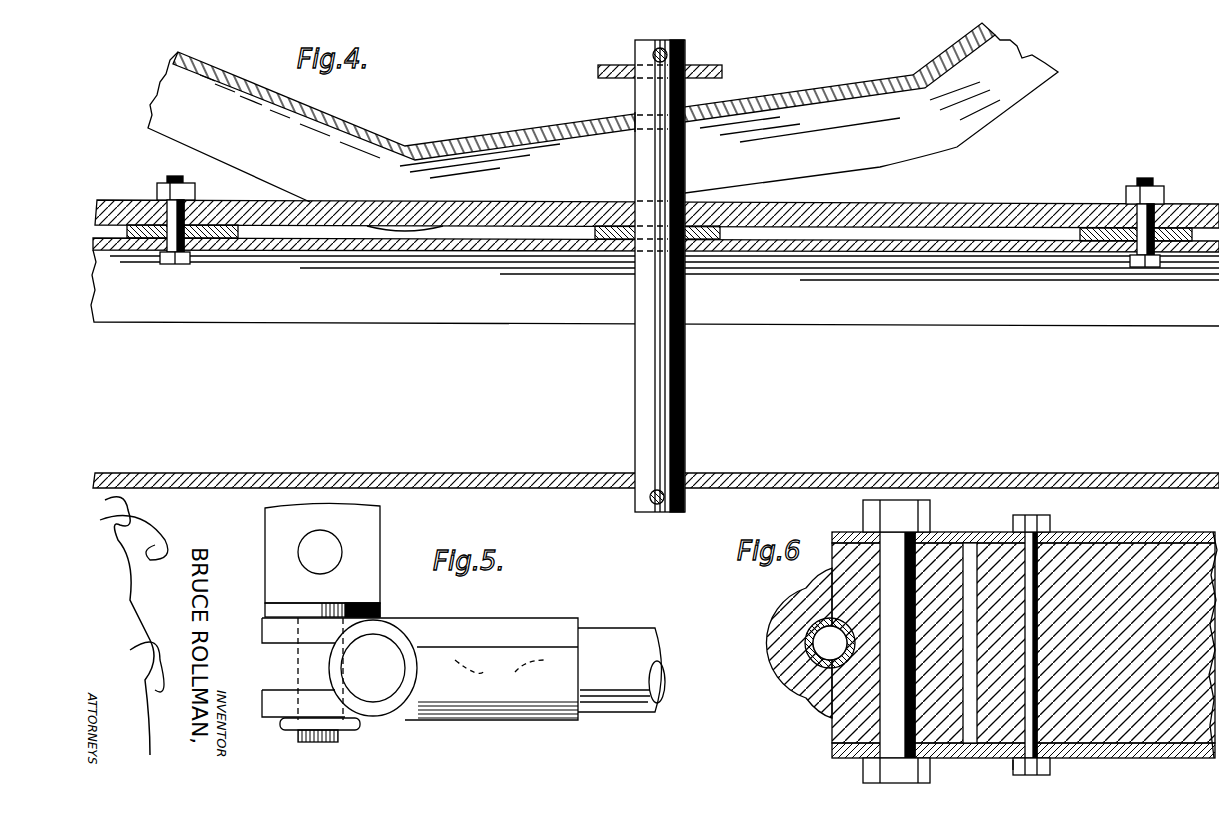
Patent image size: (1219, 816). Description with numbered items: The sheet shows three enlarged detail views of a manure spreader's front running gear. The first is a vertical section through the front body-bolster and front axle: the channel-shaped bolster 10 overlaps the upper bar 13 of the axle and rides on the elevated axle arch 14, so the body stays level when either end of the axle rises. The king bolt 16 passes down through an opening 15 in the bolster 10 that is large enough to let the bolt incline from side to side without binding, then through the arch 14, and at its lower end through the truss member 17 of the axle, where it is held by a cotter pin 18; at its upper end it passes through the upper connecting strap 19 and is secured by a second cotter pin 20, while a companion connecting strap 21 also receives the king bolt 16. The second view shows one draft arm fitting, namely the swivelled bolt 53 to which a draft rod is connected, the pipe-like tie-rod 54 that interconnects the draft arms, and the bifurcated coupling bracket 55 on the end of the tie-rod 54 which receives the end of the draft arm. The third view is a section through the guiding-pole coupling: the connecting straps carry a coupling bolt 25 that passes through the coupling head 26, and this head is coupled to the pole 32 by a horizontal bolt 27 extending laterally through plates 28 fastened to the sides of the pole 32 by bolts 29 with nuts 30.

In FIG. 4, the bolster 10 is at (500, 142).
In FIG. 4, the upper bar of the axle 13 is at (308, 200).
In FIG. 4, the axle arch 14 is at (395, 305).
In FIG. 4, the opening in the bolster 15 is at (635, 115).
In FIG. 4, the king bolt 16 is at (642, 48).
In FIG. 4, the truss member of the axle 17 is at (590, 473).
In FIG. 4, the cotter pin 18 is at (650, 500).
In FIG. 4, the upper connecting strap 19 is at (722, 70).
In FIG. 4, the cotter pin 20 is at (687, 46).
In FIG. 4, the companion connecting strap 21 is at (697, 232).
In FIG. 6, the coupling bolt 25 is at (820, 630).
In FIG. 6, the coupling head 26 is at (788, 615).
In FIG. 6, the horizontal bolt 27 is at (890, 698).
In FIG. 6, the plates 28 is at (832, 536).
In FIG. 6, the bolts 29 is at (1025, 732).
In FIG. 6, the nuts 30 is at (1043, 768).
In FIG. 6, the pole 32 is at (1132, 560).
In FIG. 5, the swivelled bolt 53 is at (355, 586).
In FIG. 5, the tie-rod 54 is at (625, 638).
In FIG. 5, the coupling bracket 55 is at (275, 632).